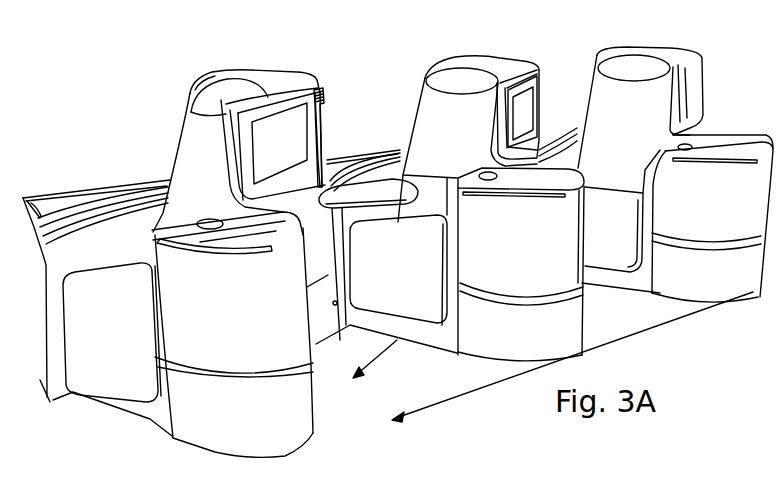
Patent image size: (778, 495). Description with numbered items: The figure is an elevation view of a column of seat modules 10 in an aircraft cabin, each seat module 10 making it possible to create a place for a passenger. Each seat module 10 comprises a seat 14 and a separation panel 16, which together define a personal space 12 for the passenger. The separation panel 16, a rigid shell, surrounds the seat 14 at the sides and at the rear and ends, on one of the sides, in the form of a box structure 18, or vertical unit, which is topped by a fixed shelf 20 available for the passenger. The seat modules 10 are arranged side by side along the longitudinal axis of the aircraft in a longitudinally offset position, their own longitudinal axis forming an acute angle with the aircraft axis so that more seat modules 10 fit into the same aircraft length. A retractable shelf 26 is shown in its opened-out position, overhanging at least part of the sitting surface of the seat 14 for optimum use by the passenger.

The seat module 10 is at (442, 418).
The personal space 12 is at (322, 362).
The seat 14 is at (442, 112).
The separation panel 16 is at (504, 67).
The box structure 18 is at (556, 274).
The fixed shelf 20 is at (517, 183).
The retractable shelf 26 is at (368, 200).